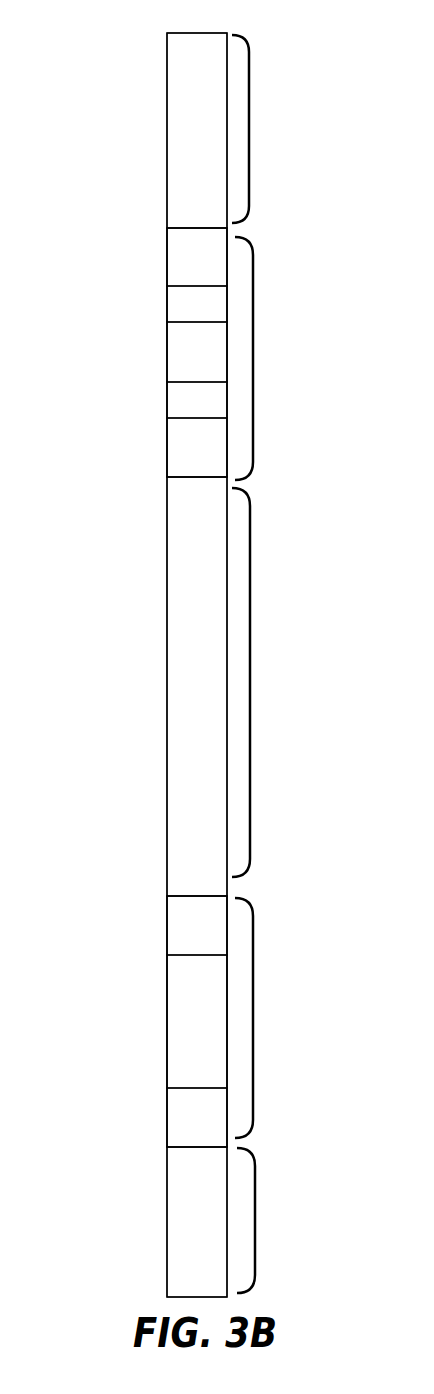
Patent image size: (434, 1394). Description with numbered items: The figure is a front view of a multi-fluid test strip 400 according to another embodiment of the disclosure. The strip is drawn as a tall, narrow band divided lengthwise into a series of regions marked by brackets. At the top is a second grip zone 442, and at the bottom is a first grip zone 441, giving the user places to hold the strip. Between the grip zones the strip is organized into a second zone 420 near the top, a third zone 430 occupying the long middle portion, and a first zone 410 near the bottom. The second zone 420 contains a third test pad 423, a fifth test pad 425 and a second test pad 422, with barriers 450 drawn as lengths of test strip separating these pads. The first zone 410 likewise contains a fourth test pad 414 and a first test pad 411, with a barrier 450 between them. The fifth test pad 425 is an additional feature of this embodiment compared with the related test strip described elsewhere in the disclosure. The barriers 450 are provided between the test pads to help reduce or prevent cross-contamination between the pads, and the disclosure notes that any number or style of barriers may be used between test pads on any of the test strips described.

The multi-fluid test strip 400 is at (97, 77).
The second grip zone 442 is at (249, 132).
The second zone 420 is at (253, 360).
The third test pad 423 is at (183, 253).
The barriers 450 is at (183, 313).
The fifth test pad 425 is at (183, 348).
The second test pad 422 is at (183, 463).
The third zone 430 is at (250, 683).
The first zone 410 is at (253, 1022).
The fourth test pad 414 is at (183, 944).
The first test pad 411 is at (183, 1135).
The first grip zone 441 is at (255, 1220).